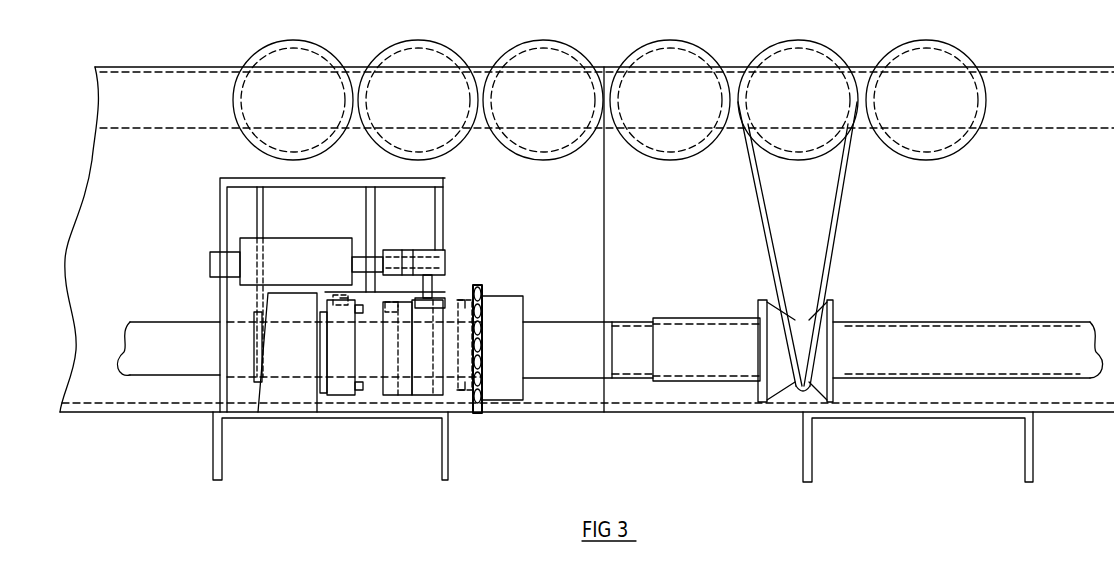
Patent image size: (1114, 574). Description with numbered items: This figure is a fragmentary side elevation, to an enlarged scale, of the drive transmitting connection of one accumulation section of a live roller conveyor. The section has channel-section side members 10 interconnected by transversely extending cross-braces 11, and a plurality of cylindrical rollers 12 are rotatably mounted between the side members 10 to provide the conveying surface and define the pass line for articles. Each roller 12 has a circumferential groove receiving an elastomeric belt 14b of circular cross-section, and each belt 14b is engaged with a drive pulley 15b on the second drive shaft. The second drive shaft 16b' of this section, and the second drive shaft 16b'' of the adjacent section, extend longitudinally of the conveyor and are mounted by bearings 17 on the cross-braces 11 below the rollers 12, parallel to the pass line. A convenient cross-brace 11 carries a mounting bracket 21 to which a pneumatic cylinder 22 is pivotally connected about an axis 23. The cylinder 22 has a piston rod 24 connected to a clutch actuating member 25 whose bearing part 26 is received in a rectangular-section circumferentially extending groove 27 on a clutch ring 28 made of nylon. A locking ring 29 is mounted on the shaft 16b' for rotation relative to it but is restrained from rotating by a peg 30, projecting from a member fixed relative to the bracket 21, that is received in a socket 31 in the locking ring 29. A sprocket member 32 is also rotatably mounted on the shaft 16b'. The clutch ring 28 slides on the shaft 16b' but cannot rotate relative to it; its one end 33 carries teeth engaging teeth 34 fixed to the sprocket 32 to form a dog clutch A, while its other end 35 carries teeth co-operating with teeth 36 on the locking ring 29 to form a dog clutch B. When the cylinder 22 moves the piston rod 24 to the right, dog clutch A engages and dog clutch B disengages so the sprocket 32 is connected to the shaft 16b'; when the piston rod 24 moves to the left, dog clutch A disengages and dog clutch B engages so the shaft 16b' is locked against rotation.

The side member 10 is at (95, 67).
The cross-brace 11 is at (442, 466).
The roller 12 is at (400, 45).
The elastomeric belt 14b is at (763, 245).
The drive pulley 15b is at (762, 300).
The second drive shaft 16b' is at (299, 324).
The second drive shaft 16b'' is at (813, 325).
The bearing 17 is at (275, 405).
The mounting bracket 21 is at (258, 185).
The pneumatic cylinder 22 is at (299, 237).
The axis 23 is at (217, 243).
The piston rod 24 is at (366, 257).
The clutch actuating member 25 is at (438, 284).
The bearing part 26 is at (420, 298).
The groove 27 is at (440, 299).
The clutch ring 28 is at (432, 393).
The locking ring 29 is at (337, 393).
The peg 30 is at (333, 298).
The socket 31 is at (342, 298).
The sprocket member 32 is at (503, 295).
The end of clutch ring 33 is at (468, 300).
The teeth 34 is at (462, 300).
The other end of clutch ring 35 is at (396, 394).
The teeth 36 is at (363, 396).
The dog clutch A is at (462, 416).
The dog clutch B is at (373, 410).